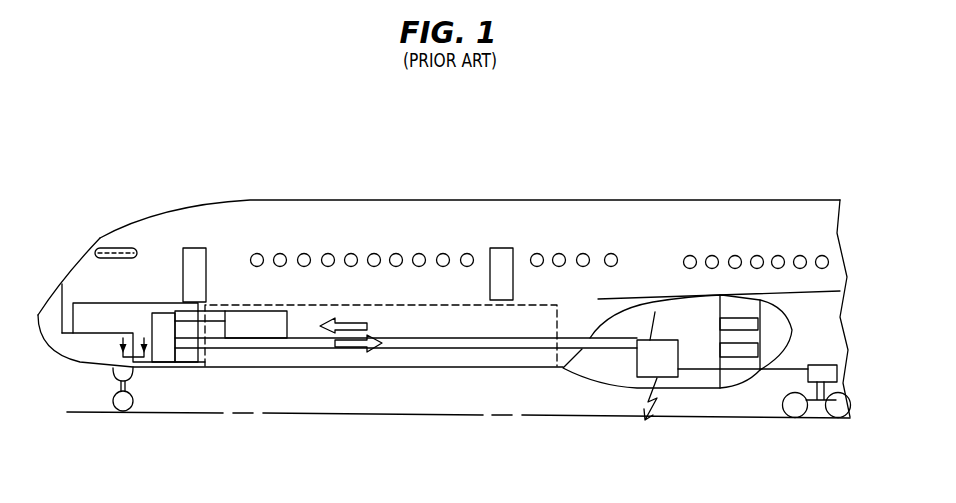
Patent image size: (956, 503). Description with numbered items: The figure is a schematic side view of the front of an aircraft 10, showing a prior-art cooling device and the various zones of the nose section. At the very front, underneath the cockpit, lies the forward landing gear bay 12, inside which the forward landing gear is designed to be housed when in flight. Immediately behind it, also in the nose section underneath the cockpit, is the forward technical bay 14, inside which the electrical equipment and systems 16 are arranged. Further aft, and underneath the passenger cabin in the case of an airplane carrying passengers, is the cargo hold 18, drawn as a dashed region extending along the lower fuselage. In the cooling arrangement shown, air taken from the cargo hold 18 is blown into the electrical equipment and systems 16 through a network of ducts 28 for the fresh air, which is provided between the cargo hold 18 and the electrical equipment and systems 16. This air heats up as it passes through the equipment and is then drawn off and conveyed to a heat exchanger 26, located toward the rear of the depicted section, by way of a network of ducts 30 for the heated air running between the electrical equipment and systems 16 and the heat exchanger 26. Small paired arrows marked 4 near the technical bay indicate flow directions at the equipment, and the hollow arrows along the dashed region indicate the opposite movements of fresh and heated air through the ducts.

The aircraft 10 is at (414, 168).
The forward landing gear bay 12 is at (102, 353).
The forward technical bay 14 is at (83, 312).
The view direction arrows 4 is at (133, 336).
The electrical equipment and systems 16 is at (160, 361).
The network of ducts for the fresh air 28 is at (215, 314).
The cargo hold 18 is at (449, 324).
The network of ducts for the heated air 30 is at (465, 352).
The heat exchanger 26 is at (640, 382).